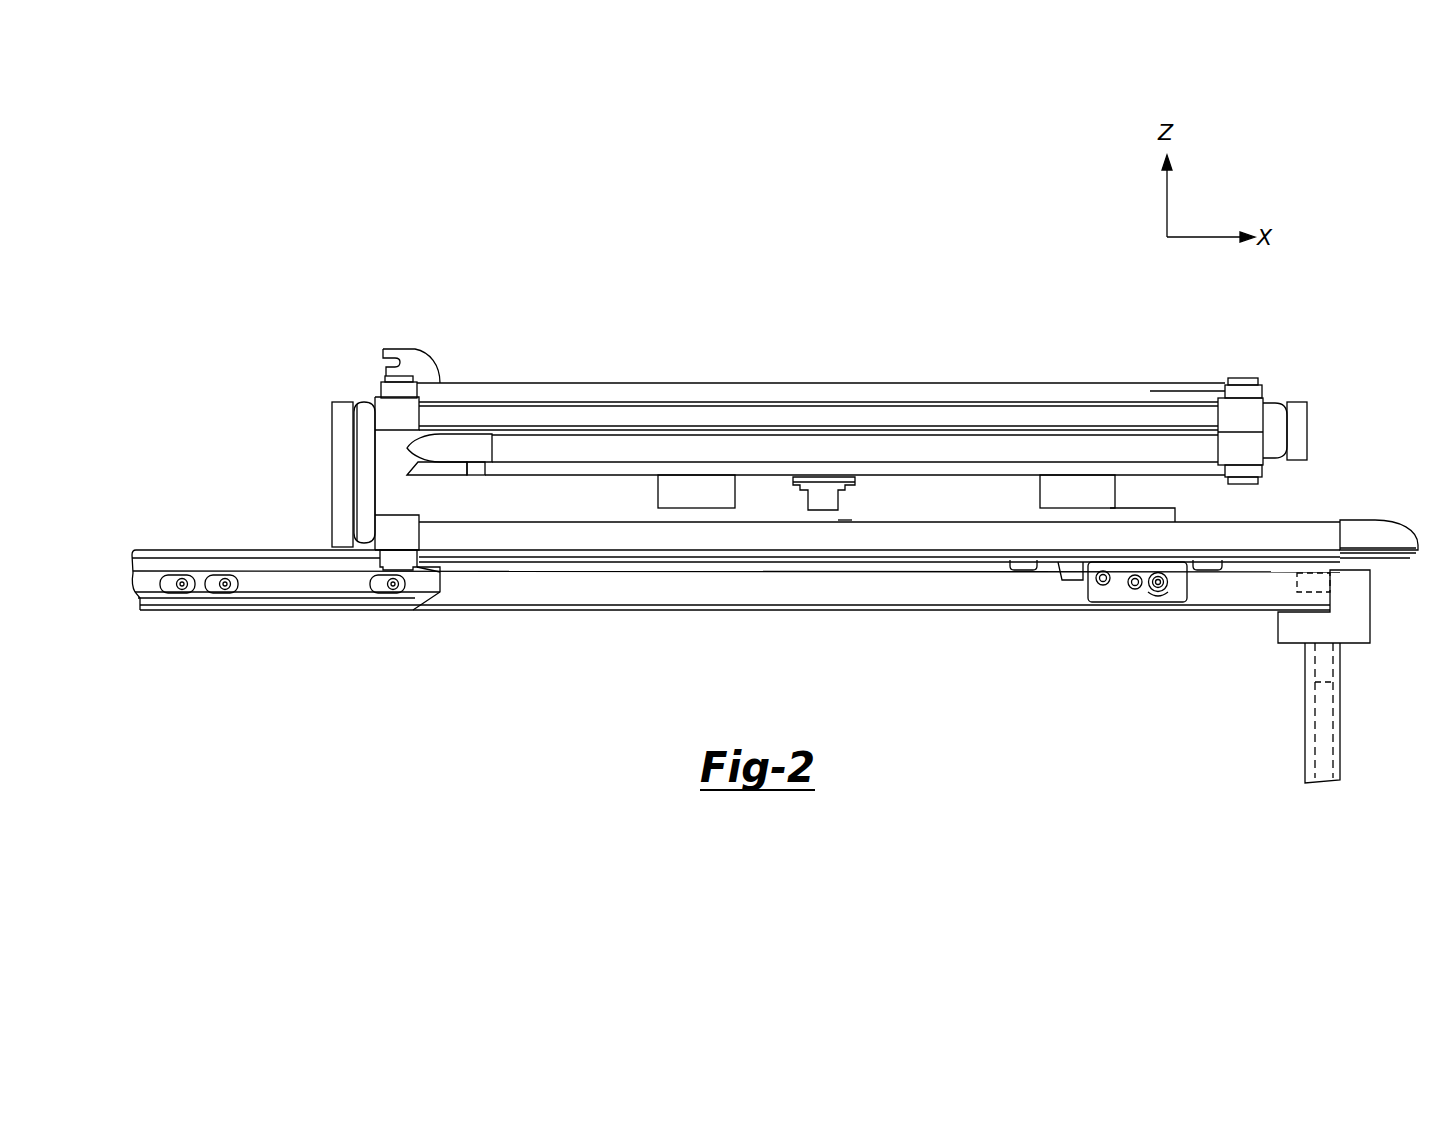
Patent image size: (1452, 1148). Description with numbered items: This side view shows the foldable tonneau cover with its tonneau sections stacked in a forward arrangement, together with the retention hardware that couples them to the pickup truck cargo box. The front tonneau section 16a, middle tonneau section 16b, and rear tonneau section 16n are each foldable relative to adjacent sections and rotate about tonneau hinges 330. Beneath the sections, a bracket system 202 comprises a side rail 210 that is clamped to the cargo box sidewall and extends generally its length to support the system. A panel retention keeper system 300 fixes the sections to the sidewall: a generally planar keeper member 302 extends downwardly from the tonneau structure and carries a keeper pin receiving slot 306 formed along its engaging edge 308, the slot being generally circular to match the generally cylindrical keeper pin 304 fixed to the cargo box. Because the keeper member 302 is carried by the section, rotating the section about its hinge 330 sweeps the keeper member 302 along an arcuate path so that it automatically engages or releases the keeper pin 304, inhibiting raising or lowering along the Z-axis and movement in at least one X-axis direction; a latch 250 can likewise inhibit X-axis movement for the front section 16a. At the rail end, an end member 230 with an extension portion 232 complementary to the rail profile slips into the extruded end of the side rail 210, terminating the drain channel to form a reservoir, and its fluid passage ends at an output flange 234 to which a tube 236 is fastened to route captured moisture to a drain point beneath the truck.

The bracket system 202 is at (656, 666).
The side rails 210 is at (847, 608).
The front tonneau section 16a is at (1336, 520).
The middle tonneau section 16b is at (788, 388).
The rear tonneau section 16n is at (620, 435).
The tonneau hinges 330 is at (375, 415).
The panel retention keeper system 300 is at (360, 313).
The keeper member 302 is at (417, 349).
The keeper pin 304 is at (190, 588).
The keeper pin receiving slot 306 is at (398, 367).
The engaging edge 308 is at (385, 377).
The latch 250 is at (1118, 597).
The extension portion 232 is at (1297, 580).
The end member 230 is at (1370, 597).
The output flange 234 is at (1340, 657).
The tube 236 is at (1340, 738).